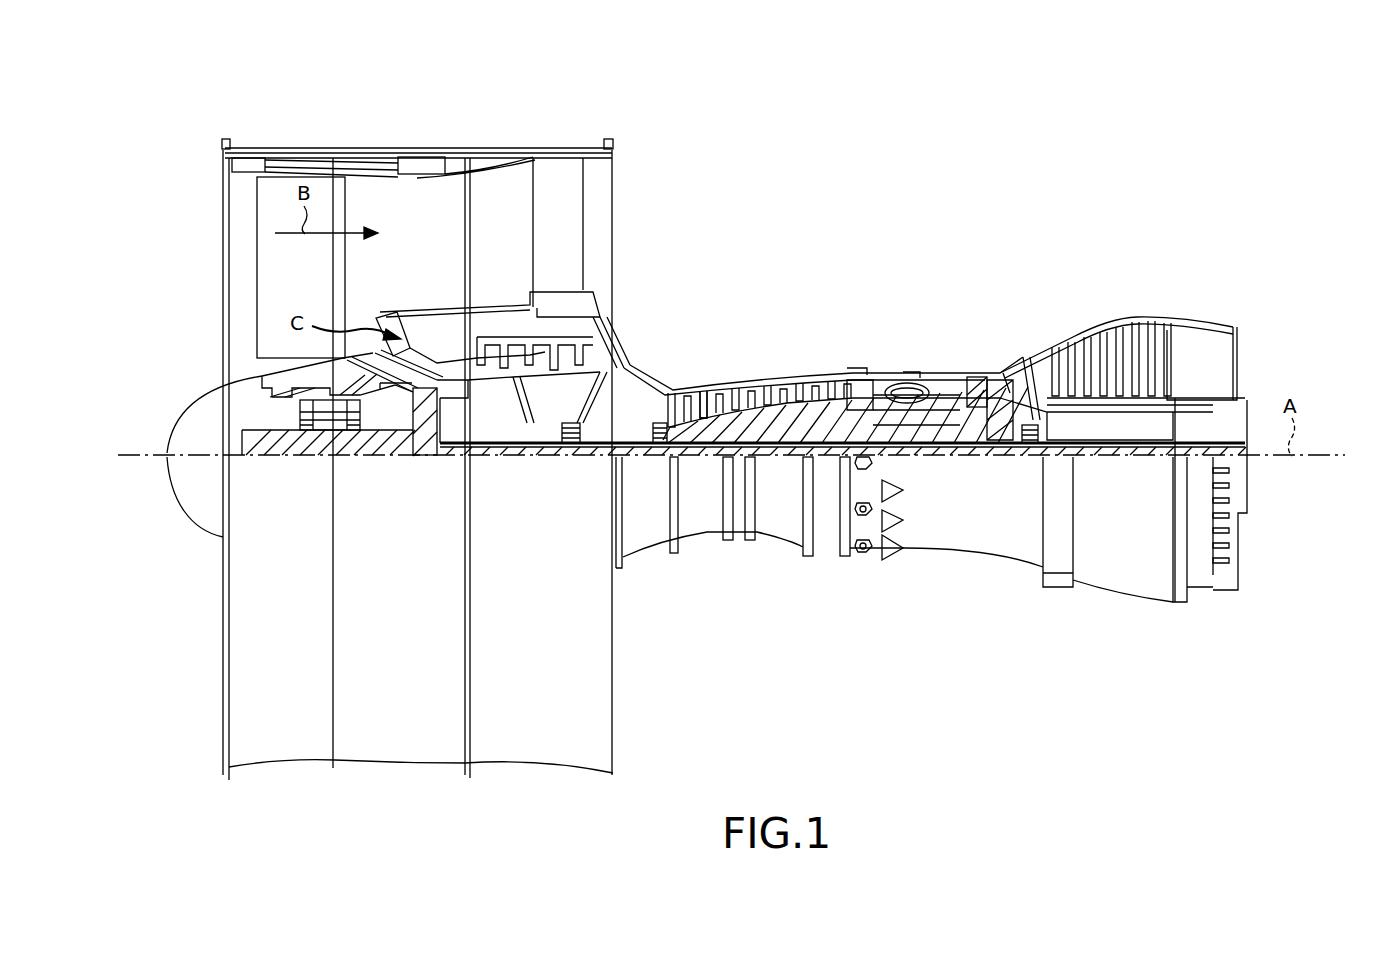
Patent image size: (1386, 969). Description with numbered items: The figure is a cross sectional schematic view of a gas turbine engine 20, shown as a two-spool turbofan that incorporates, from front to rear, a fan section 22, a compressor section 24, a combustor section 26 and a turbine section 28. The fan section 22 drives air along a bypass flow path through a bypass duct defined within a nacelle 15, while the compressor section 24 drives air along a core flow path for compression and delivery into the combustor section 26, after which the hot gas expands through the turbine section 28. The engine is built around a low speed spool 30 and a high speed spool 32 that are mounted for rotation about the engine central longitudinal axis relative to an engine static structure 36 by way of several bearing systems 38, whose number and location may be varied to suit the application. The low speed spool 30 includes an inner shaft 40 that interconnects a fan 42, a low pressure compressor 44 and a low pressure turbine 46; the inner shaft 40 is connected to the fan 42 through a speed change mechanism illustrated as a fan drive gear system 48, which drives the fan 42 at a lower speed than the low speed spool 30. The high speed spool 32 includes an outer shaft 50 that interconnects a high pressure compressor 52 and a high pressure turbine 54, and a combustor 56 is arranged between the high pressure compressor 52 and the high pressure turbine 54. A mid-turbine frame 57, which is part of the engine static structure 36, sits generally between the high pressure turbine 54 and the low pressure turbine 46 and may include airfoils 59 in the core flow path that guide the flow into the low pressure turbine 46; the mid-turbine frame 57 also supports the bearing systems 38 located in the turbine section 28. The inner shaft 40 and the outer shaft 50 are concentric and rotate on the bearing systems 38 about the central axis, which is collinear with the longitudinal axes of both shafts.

The nacelle 15 is at (418, 160).
The gas turbine engine 20 is at (940, 155).
The fan section 22 is at (330, 128).
The compressor section 24 is at (670, 345).
The combustor section 26 is at (902, 328).
The turbine section 28 is at (1072, 290).
The low speed spool 30 is at (783, 458).
The high speed spool 32 is at (838, 410).
The engine static structure 36 is at (828, 530).
The bearing systems 38 is at (575, 448).
The inner shaft 40 is at (636, 458).
The fan 42 is at (310, 269).
The low pressure compressor 44 is at (545, 345).
The low pressure turbine 46 is at (1110, 345).
The fan drive gear system 48 is at (430, 450).
The outer shaft 50 is at (880, 443).
The high pressure compressor 52 is at (782, 372).
The high pressure turbine 54 is at (980, 375).
The combustor 56 is at (928, 392).
The mid-turbine frame 57 is at (1024, 352).
The airfoils 59 is at (1020, 385).